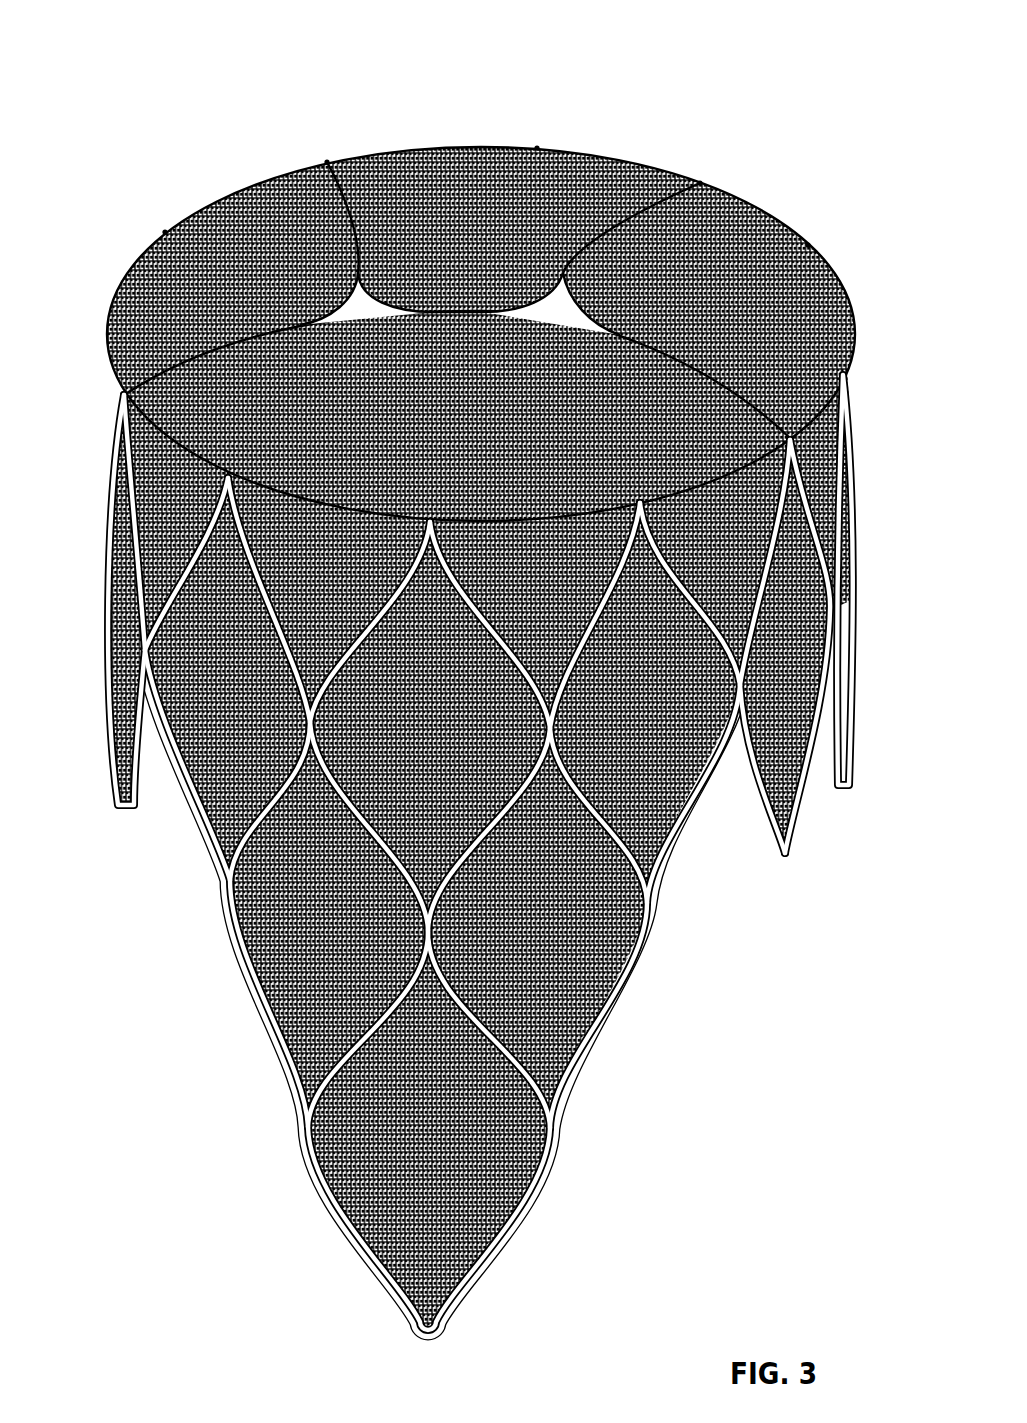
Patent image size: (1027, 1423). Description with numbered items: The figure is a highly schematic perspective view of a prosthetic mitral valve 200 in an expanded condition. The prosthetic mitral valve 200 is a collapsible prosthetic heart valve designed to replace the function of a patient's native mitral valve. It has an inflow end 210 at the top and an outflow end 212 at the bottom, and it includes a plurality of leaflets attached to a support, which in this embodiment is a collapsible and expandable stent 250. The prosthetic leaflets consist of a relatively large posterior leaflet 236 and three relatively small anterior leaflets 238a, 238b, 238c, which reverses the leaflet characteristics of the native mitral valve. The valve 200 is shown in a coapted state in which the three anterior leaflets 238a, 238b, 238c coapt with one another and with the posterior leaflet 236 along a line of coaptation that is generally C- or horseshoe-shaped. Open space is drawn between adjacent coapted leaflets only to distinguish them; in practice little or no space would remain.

The prosthetic mitral valve 200 is at (113, 52).
The inflow end 210 is at (665, 133).
The outflow end 212 is at (151, 896).
The posterior leaflet 236 is at (160, 388).
The anterior leaflet 238a is at (740, 225).
The anterior leaflet 238b is at (447, 165).
The anterior leaflet 238c is at (185, 300).
The stent 250 is at (582, 1068).